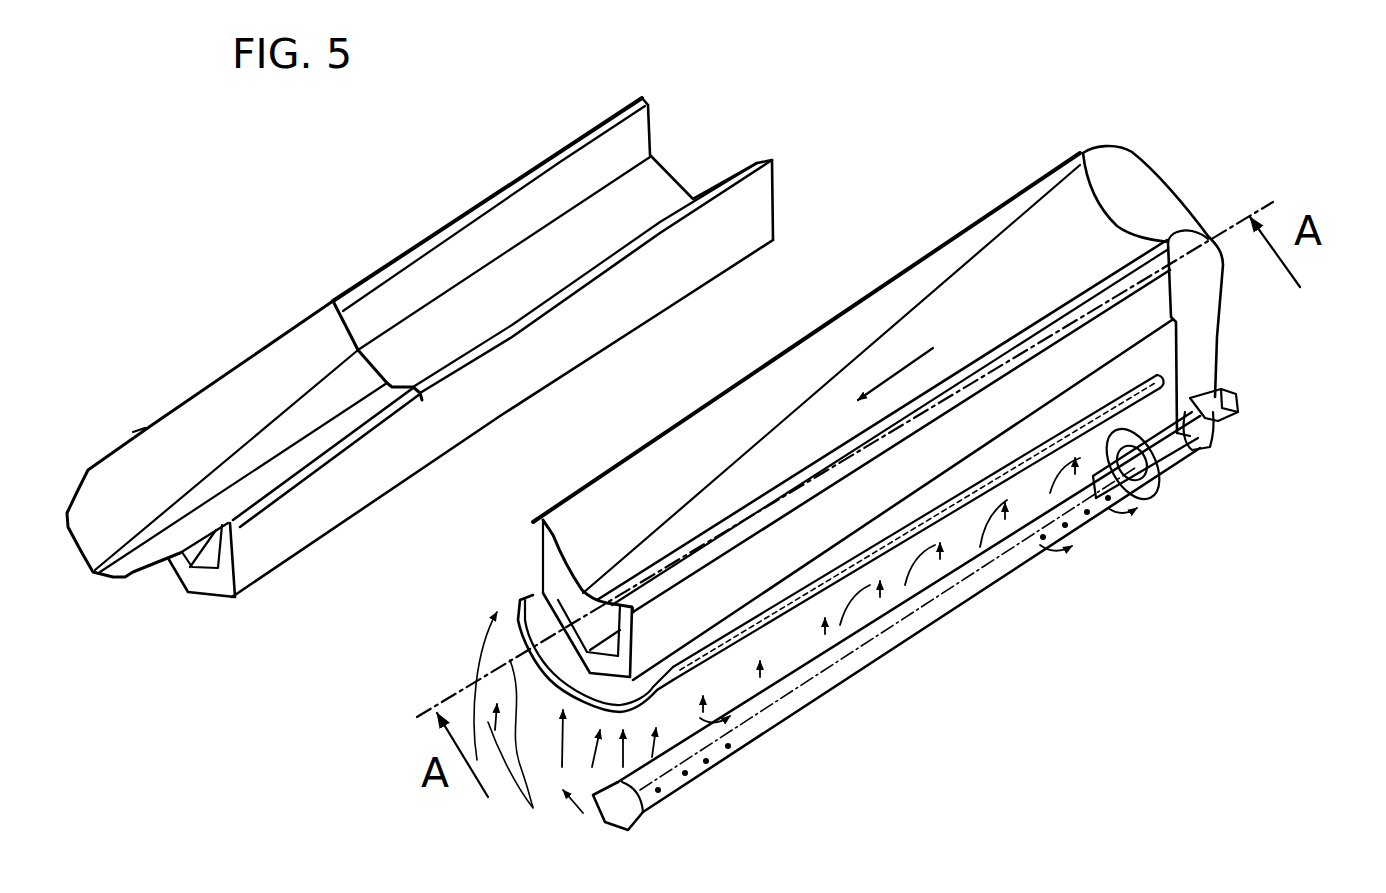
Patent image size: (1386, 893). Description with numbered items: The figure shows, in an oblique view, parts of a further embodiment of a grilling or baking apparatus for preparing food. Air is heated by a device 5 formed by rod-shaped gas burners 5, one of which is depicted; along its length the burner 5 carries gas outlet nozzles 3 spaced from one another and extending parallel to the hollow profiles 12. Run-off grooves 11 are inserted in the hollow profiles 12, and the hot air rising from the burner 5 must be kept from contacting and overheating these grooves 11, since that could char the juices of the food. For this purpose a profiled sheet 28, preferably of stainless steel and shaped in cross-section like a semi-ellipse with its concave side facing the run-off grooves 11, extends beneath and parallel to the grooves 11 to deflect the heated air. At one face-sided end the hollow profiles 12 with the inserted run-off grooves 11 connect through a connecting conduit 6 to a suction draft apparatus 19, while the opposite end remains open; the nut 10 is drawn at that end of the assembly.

The gas outlet nozzles 3 is at (658, 790).
The rod-shaped gas burner 5 is at (975, 598).
The connecting conduit 6 is at (1197, 352).
The nut 10 is at (1238, 410).
The run-off groove 11 is at (243, 392).
The hollow profile 12 is at (282, 540).
The suction draft apparatus 19 is at (1197, 463).
The profiled sheet 28 is at (540, 660).